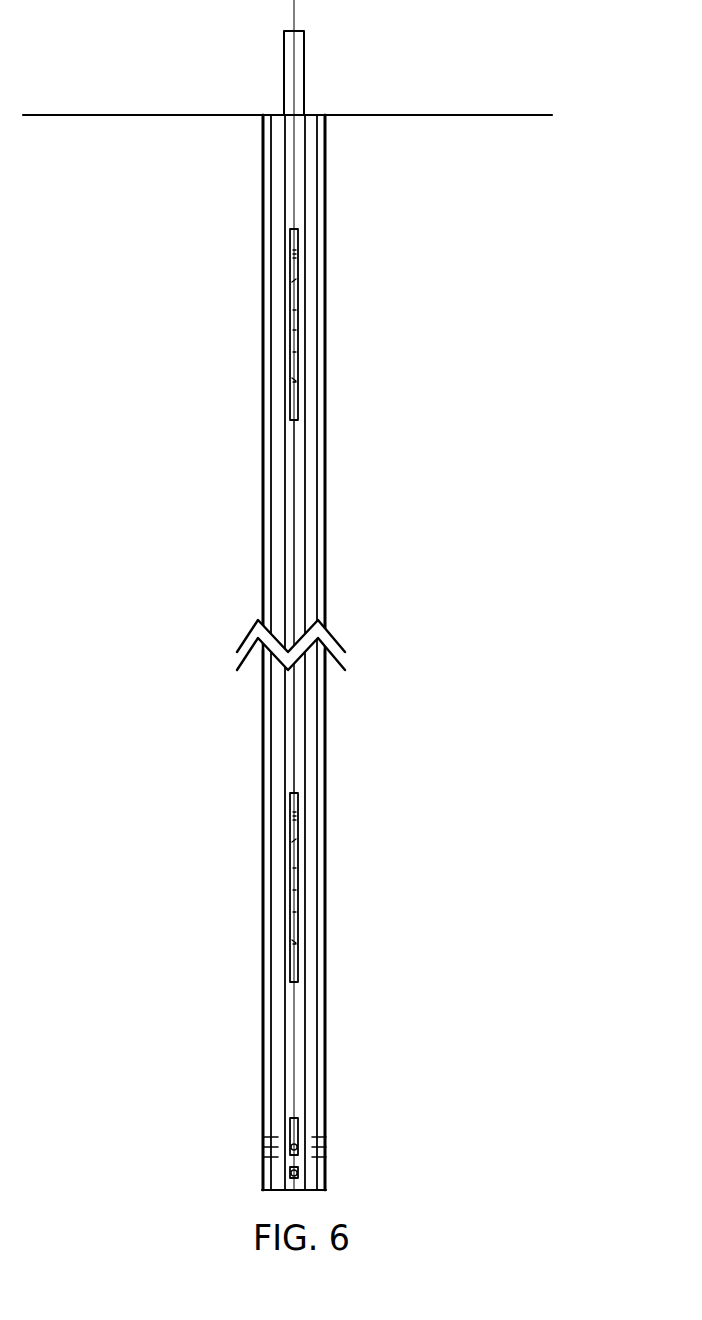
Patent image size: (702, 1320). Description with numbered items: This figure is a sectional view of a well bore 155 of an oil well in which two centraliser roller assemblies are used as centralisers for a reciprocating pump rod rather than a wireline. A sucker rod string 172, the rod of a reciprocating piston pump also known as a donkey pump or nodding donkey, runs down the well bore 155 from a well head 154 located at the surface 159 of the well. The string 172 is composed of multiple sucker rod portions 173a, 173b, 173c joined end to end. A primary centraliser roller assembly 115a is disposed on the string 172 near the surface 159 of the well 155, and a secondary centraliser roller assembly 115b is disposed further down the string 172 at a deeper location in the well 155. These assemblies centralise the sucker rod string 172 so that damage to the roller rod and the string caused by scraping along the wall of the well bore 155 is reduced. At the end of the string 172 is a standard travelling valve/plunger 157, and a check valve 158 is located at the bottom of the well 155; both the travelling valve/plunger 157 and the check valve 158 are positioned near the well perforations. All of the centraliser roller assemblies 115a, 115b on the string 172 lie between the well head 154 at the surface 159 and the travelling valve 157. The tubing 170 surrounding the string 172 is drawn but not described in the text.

The well head 154 is at (305, 80).
The surface 159 is at (541, 108).
The primary centraliser roller assembly 115a is at (221, 296).
The secondary centraliser roller assembly 115b is at (221, 844).
The tubing string 170 is at (285, 462).
The well bore 155 is at (263, 583).
The sucker rod string 172 is at (295, 552).
The sucker rod portion 173a is at (295, 208).
The sucker rod portion 173b is at (295, 613).
The sucker rod portion 173c is at (295, 1057).
The travelling valve/plunger 157 is at (290, 1130).
The check valve 158 is at (290, 1172).